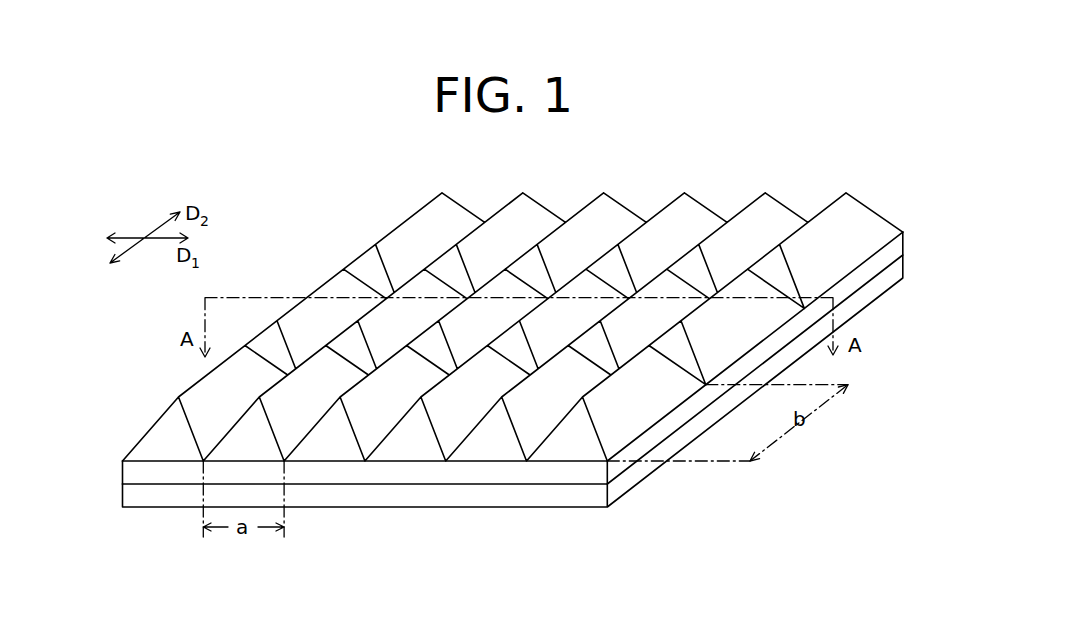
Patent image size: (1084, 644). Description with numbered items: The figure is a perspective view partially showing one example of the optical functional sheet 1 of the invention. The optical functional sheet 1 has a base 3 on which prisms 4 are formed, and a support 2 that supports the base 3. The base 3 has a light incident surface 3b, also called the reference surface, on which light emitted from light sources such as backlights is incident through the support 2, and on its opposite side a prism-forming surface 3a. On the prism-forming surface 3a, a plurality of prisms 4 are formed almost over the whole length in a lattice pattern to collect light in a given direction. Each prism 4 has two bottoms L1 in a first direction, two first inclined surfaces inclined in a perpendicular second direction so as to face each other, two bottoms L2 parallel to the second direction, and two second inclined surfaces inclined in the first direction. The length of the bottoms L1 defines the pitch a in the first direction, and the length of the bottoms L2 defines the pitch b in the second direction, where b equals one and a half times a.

The optical functional sheet 1 is at (321, 238).
The support 2 is at (122, 495).
The base 3 is at (122, 473).
The prism-forming surface 3a is at (153, 461).
The light incident surface 3b is at (585, 485).
The prisms 4 is at (190, 393).
The bottoms in the first direction L1 is at (570, 462).
The bottoms parallel to the second direction L2 is at (662, 425).